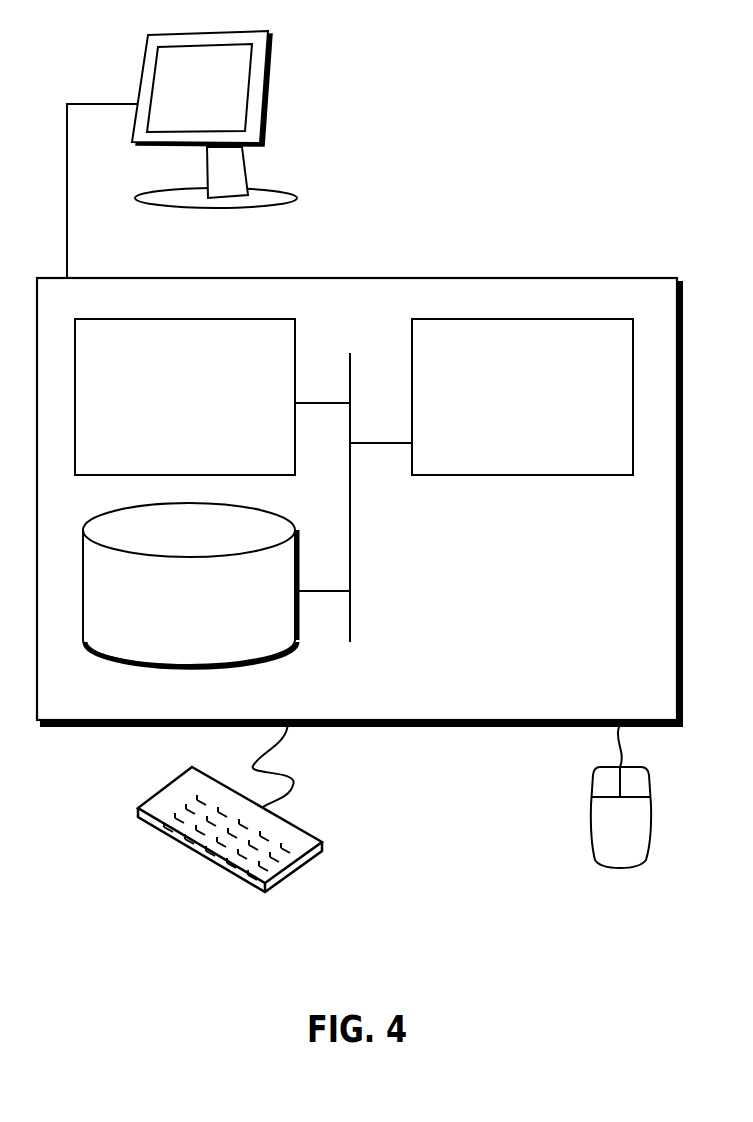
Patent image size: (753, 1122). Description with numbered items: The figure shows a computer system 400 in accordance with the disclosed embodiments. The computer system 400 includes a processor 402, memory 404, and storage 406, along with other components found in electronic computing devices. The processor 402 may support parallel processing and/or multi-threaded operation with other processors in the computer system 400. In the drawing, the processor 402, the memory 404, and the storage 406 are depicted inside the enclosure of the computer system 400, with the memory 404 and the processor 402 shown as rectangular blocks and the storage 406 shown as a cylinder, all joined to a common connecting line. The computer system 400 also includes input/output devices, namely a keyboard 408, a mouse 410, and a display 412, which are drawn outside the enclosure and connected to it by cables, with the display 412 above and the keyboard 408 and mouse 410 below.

The computer system 400 is at (402, 257).
The processor 402 is at (547, 408).
The memory 404 is at (206, 408).
The storage 406 is at (213, 614).
The keyboard 408 is at (158, 830).
The mouse 410 is at (643, 838).
The display 412 is at (182, 154).